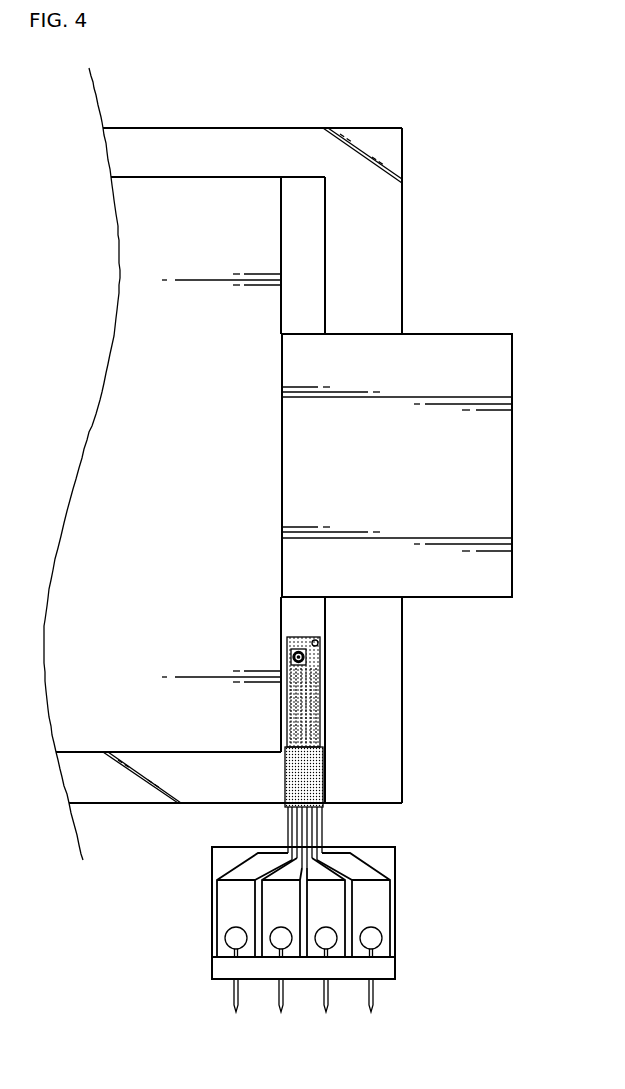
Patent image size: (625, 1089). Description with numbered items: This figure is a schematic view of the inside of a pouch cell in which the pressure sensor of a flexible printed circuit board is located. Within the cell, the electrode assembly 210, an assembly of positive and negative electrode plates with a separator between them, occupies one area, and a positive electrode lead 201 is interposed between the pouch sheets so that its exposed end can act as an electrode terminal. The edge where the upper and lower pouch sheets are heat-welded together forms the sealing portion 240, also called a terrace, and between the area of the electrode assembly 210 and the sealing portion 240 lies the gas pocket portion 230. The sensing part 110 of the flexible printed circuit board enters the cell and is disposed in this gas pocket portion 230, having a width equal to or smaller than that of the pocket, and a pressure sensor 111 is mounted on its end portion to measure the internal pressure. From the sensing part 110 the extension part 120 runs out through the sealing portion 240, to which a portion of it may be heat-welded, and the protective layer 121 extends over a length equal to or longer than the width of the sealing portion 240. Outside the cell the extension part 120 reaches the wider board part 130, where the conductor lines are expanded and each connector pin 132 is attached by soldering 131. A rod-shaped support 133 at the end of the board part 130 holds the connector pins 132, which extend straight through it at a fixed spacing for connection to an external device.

The electrode assembly 210 is at (175, 208).
The positive electrode lead 201 is at (500, 452).
The gas pocket portion 230 is at (302, 612).
The sealing portion 240 is at (390, 686).
The sensing part 110 is at (328, 704).
The pressure sensor 111 is at (318, 652).
The protective layer 121 is at (316, 770).
The extension part 120 is at (333, 825).
The board part 130 is at (412, 908).
The soldering 131 is at (372, 938).
The support 133 is at (383, 968).
The connector pins 132 is at (376, 998).